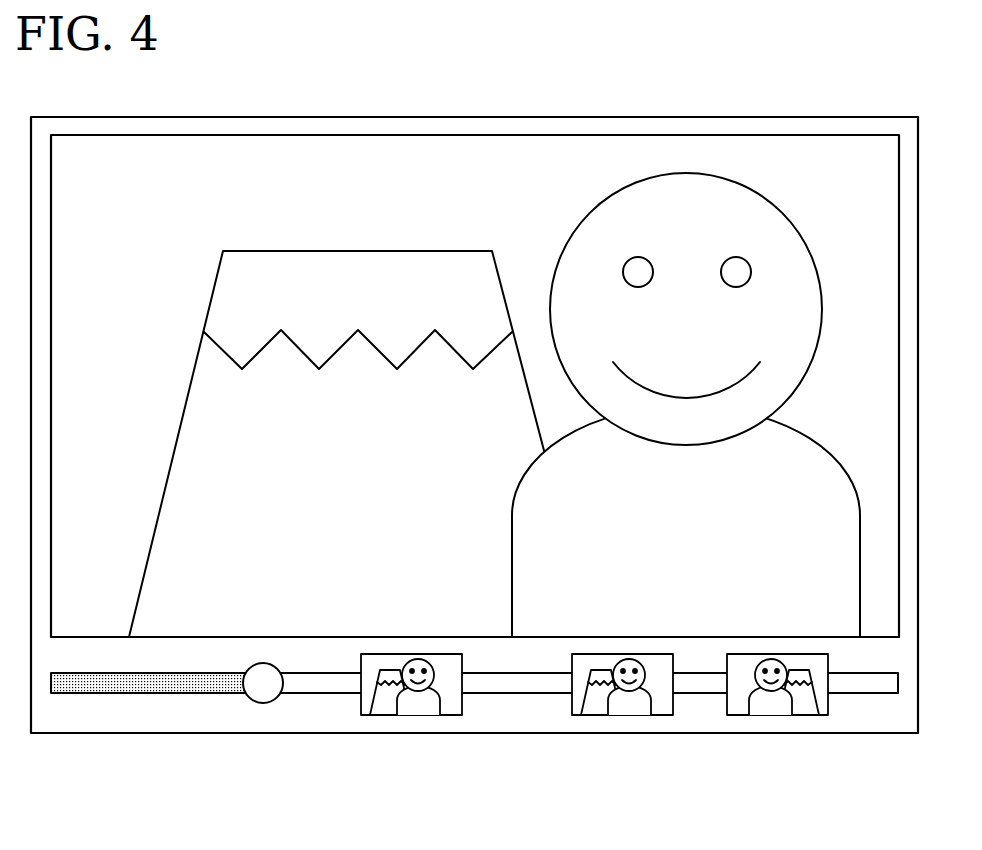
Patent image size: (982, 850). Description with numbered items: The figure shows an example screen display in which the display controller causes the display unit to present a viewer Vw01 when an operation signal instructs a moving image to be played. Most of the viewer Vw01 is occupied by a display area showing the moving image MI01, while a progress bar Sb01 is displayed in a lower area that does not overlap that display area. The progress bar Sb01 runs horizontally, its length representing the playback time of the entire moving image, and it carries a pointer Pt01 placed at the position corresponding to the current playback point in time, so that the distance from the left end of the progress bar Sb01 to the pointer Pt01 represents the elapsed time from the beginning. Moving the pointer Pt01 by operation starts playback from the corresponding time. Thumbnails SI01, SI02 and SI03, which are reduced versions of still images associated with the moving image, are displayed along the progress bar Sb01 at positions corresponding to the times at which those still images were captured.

The viewer Vw01 is at (807, 117).
The moving image MI01 is at (545, 135).
The progress bar Sb01 is at (878, 695).
The pointer Pt01 is at (263, 703).
The thumbnail SI01 is at (411, 715).
The thumbnail SI02 is at (622, 715).
The thumbnail SI03 is at (777, 715).